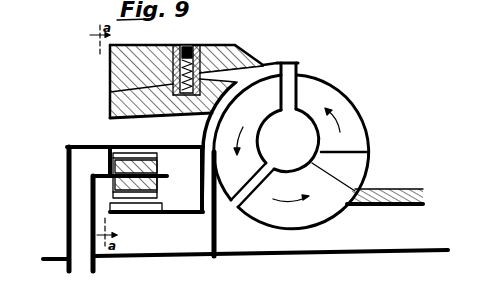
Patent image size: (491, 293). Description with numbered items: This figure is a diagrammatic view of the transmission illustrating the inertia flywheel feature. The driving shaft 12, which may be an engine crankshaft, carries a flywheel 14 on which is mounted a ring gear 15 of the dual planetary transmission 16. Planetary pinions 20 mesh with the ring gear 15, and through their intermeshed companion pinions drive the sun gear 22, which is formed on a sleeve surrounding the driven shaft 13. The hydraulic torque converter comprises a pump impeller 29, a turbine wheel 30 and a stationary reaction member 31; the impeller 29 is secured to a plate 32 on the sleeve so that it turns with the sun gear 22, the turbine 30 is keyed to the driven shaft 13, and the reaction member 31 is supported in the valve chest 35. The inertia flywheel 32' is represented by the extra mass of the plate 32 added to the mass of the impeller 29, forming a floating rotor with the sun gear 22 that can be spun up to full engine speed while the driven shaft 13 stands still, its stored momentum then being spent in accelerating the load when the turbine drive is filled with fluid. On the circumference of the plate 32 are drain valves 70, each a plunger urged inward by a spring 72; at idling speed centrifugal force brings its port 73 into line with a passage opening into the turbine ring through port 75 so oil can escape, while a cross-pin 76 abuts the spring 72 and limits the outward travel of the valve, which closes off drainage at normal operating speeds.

The driving shaft 12 is at (50, 264).
The driven shaft 13 is at (263, 254).
The flywheel 14 is at (67, 206).
The ring gear 15 is at (118, 147).
The dual planetary transmission 16 is at (109, 168).
The planetary pinions 20 is at (157, 182).
The sun gear 22 is at (133, 212).
The pump impeller 29 is at (344, 96).
The turbine wheel 30 is at (215, 128).
The reaction member 31 is at (320, 216).
The plate 32 is at (186, 179).
The inertia flywheel 32' is at (238, 56).
The valve chest 35 is at (408, 193).
The drain valve 70 is at (199, 46).
The spring 72 is at (110, 92).
The port 73 is at (232, 93).
The port 75 is at (277, 62).
The cross-pin 76 is at (185, 44).